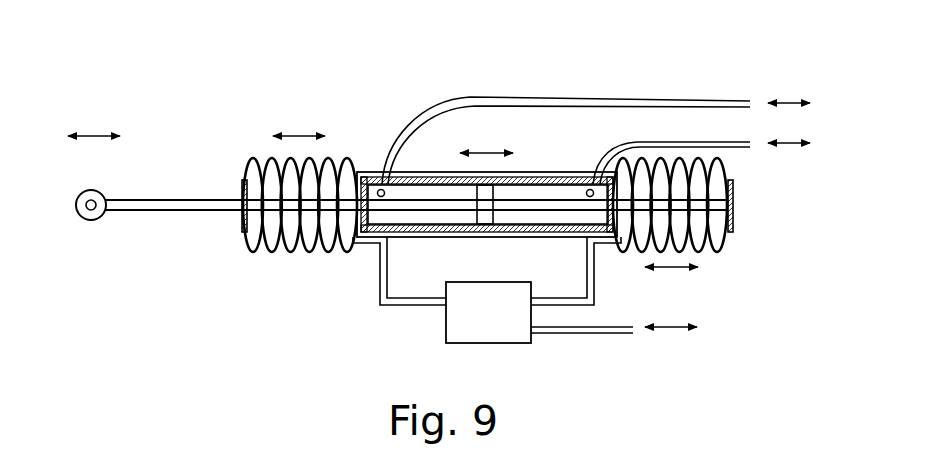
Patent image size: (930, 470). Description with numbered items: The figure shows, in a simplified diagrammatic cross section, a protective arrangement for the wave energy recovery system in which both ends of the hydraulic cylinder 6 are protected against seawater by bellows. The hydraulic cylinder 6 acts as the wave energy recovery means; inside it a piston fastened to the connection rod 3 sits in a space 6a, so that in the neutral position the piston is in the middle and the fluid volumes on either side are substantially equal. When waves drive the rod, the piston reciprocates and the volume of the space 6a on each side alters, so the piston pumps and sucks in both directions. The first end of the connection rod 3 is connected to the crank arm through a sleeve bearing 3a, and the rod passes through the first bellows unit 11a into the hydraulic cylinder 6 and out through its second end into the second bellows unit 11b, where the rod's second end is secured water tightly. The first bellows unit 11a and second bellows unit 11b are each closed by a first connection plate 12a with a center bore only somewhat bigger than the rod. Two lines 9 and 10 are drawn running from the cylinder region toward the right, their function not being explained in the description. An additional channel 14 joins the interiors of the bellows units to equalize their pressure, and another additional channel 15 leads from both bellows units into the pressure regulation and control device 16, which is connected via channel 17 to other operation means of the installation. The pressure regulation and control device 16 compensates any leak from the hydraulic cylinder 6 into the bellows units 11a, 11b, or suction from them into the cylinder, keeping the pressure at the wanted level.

The connection rod 3 is at (163, 206).
The sleeve bearing 3a is at (85, 219).
The hydraulic cylinder 6 is at (458, 227).
The space 6a is at (436, 220).
The first fluid line 9 is at (718, 102).
The second fluid line 10 is at (740, 148).
The first bellows unit 11a is at (255, 147).
The second bellows unit 11b is at (724, 274).
The first connection plate 12a is at (242, 192).
The additional channel 14 is at (538, 163).
The another additional channel 15 is at (380, 263).
The pressure regulation and control device 16 is at (448, 321).
The channel 17 is at (633, 330).